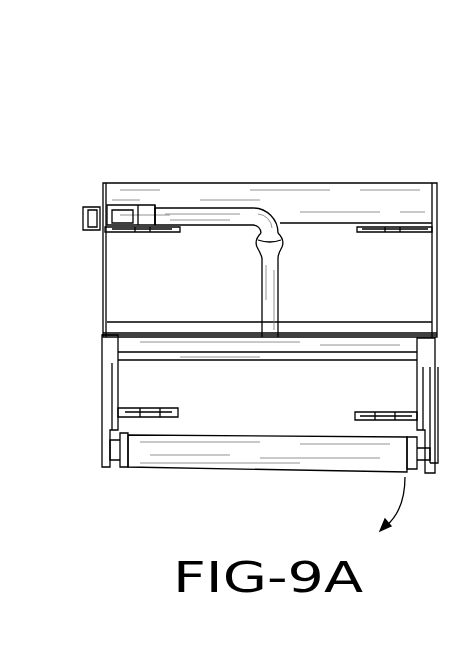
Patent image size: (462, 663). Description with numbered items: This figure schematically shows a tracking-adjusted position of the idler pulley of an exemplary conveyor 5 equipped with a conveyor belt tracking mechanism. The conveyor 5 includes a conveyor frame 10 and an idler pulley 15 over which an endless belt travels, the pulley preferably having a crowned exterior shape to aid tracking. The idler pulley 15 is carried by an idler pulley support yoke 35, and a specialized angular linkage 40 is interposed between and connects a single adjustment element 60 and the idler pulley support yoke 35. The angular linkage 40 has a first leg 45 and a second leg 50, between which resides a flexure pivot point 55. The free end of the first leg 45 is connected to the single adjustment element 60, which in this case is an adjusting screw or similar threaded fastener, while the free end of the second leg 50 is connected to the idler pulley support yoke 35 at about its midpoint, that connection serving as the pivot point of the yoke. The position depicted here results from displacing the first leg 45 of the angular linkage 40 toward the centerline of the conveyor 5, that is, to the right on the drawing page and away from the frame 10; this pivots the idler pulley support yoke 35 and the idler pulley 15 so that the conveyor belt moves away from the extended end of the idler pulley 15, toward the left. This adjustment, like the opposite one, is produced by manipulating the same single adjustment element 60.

The conveyor 5 is at (230, 109).
The conveyor frame 10 is at (103, 195).
The idler pulley 15 is at (218, 452).
The idler pulley support yoke 35 is at (112, 345).
The angular linkage 40 is at (280, 214).
The first leg 45 is at (195, 217).
The second leg 50 is at (267, 302).
The flexure pivot point 55 is at (275, 247).
The single adjustment element 60 is at (88, 217).